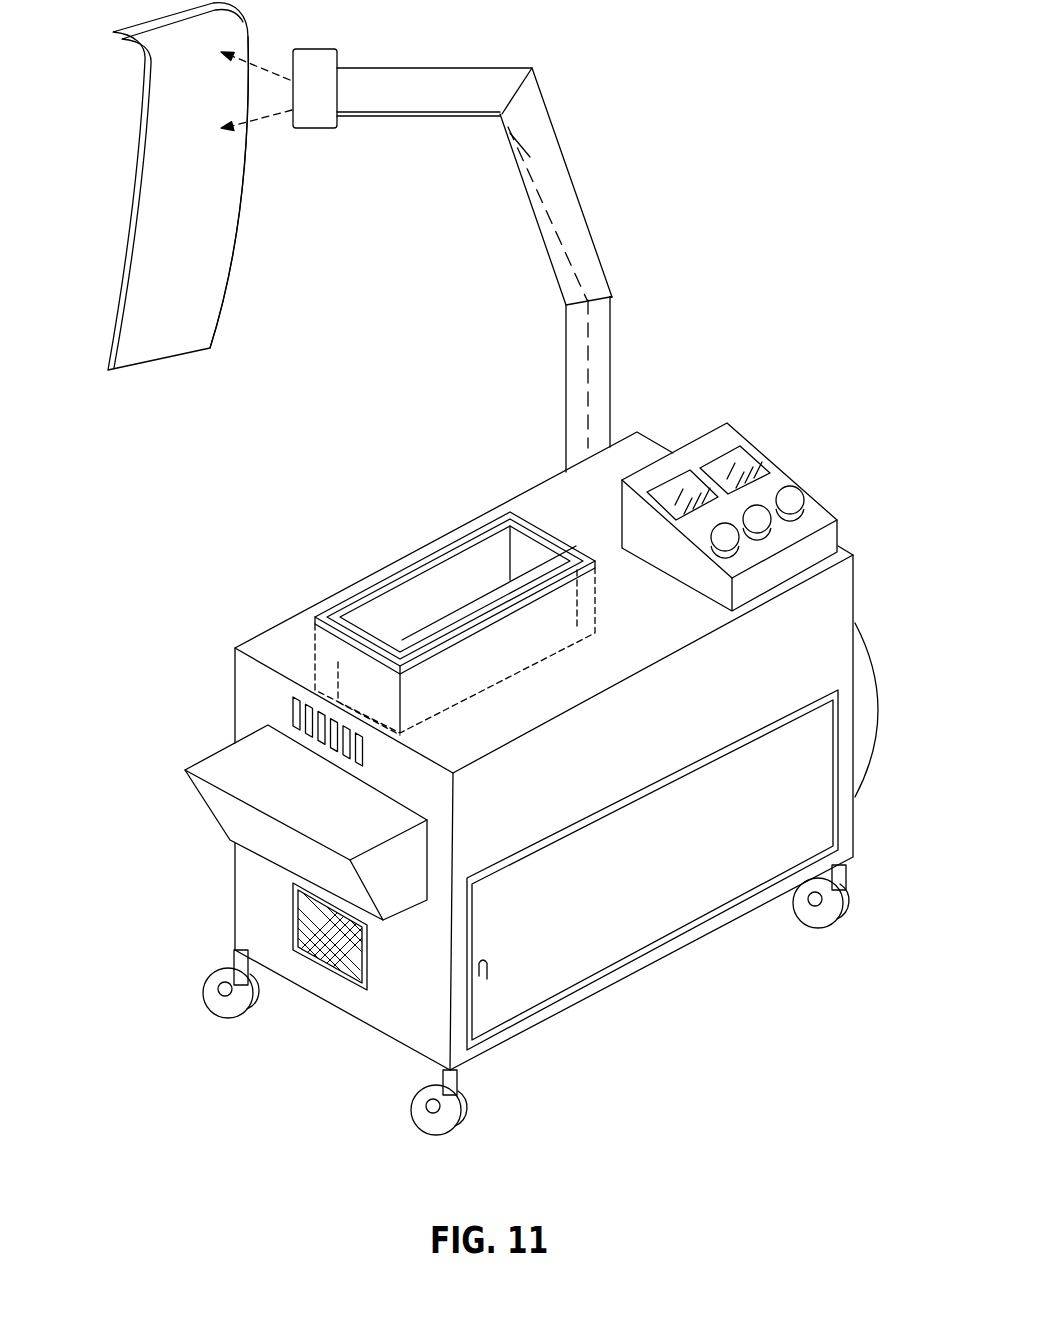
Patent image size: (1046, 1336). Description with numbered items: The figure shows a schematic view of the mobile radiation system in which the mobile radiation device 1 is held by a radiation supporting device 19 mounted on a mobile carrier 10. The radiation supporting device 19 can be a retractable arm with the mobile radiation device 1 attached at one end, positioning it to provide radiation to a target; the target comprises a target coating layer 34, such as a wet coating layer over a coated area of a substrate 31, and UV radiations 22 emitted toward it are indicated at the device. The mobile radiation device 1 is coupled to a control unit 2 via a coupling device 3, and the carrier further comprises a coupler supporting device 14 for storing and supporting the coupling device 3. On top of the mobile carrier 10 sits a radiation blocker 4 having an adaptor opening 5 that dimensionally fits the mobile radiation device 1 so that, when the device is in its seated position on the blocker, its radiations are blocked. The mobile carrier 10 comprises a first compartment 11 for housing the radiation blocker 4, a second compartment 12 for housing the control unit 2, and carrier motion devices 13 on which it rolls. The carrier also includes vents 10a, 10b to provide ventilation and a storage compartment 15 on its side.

The mobile radiation device 1 is at (330, 48).
The radiation supporting device 19 is at (457, 68).
The coupling device 3 is at (538, 167).
The UV radiations 22 is at (270, 117).
The substrate 31 is at (128, 252).
The target coating layer 34 is at (218, 245).
The first compartment 11 is at (313, 663).
The mobile carrier 10 is at (688, 1044).
The coupler supporting device 14 is at (870, 707).
The radiation blocker 4 is at (337, 603).
The adaptor opening 5 is at (417, 613).
The control unit 2 is at (778, 478).
The second compartment 12 is at (613, 543).
The vent 10a is at (292, 716).
The vent 10b is at (293, 932).
The carrier motion device 13 is at (227, 1012).
The storage compartment 15 is at (390, 895).